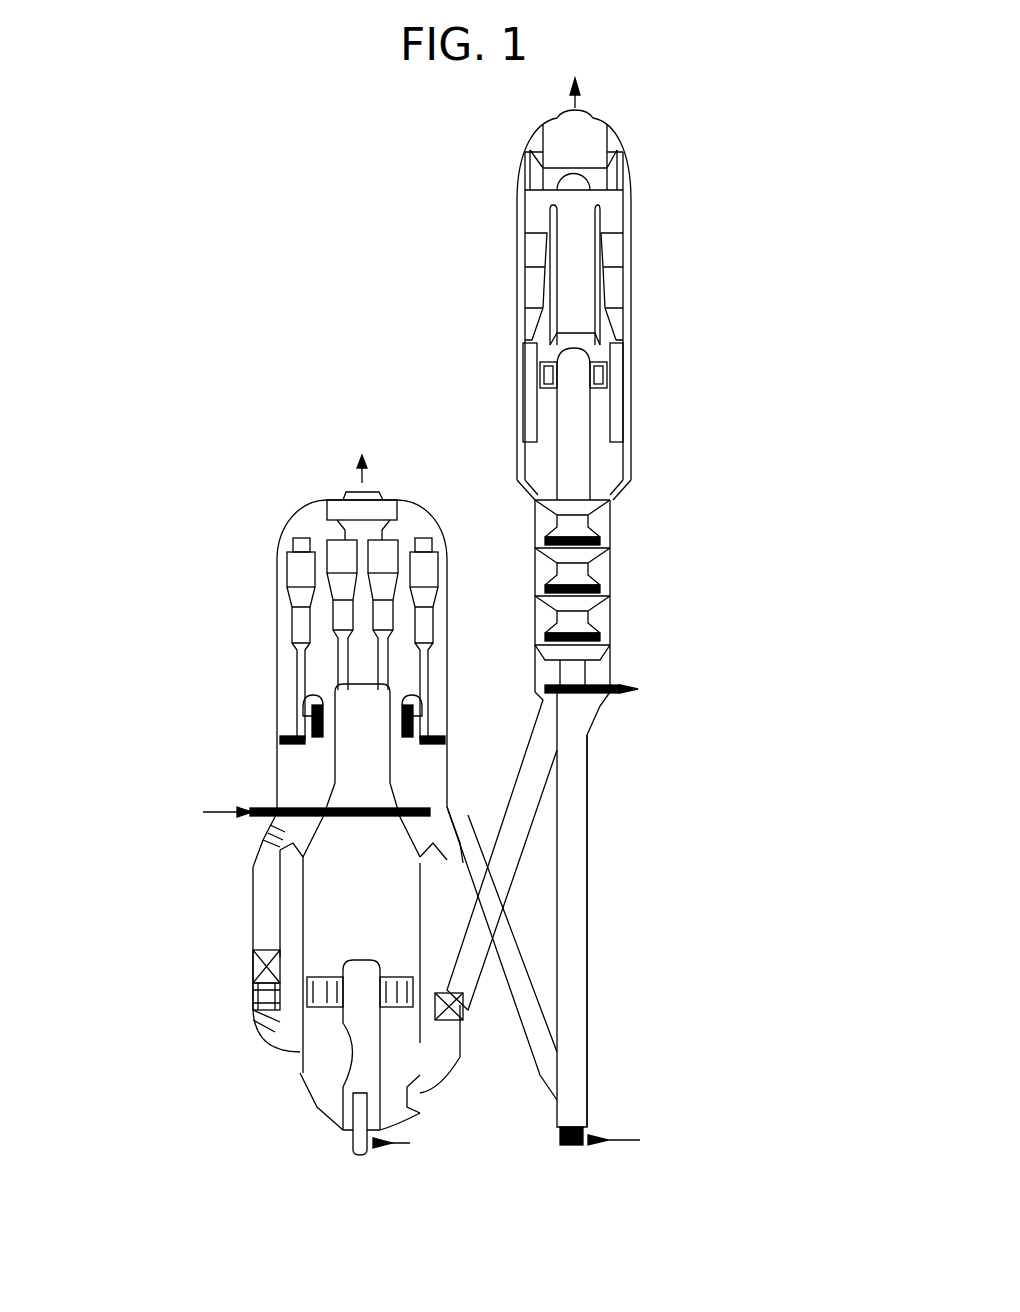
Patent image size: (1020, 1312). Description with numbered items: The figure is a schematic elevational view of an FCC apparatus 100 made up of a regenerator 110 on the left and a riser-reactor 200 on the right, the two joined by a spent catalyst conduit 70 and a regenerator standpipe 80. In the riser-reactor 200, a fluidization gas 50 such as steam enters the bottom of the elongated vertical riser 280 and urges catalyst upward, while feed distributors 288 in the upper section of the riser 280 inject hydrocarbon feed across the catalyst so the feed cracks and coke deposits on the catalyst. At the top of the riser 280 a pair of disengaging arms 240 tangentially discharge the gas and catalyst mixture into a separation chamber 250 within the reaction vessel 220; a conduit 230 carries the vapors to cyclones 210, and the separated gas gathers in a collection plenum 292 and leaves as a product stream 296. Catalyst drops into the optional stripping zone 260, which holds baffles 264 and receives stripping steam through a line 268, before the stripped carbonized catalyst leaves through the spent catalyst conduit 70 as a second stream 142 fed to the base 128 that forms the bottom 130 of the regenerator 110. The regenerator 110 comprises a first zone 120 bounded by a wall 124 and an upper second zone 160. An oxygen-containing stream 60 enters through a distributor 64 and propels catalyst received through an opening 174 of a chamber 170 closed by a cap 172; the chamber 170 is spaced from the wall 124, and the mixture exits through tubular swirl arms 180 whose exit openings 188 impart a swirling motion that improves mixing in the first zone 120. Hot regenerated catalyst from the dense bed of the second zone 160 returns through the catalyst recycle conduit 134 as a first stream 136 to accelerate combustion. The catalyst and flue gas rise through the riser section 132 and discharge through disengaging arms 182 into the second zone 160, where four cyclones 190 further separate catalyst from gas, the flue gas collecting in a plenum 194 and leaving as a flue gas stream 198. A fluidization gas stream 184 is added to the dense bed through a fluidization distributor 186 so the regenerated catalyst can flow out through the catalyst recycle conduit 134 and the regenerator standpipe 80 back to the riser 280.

The FCC apparatus 100 is at (215, 303).
The regenerator 110 is at (270, 653).
The first zone 120 is at (387, 905).
The wall 124 is at (257, 852).
The base 128 is at (420, 1092).
The bottom 130 is at (323, 1120).
The riser section 132 is at (347, 763).
The catalyst recycle conduit 134 is at (260, 900).
The first stream 136 is at (297, 1053).
The second stream 142 is at (407, 1117).
The second zone 160 is at (423, 510).
The chamber 170 is at (377, 1047).
The cap 172 is at (350, 960).
The opening 174 is at (340, 1048).
The swirl arms 180 is at (297, 965).
The disengaging arms 182 is at (313, 707).
The fluidization gas stream 184 is at (220, 810).
The fluidization distributor 186 is at (370, 807).
The exit openings 188 is at (300, 1010).
The cyclones 190 is at (343, 550).
The plenum 194 is at (343, 502).
The flue gas stream 198 is at (365, 483).
The oxygen-containing stream 60 is at (410, 1143).
The distributor 64 is at (353, 1147).
The spent catalyst conduit 70 is at (513, 843).
The regenerator standpipe 80 is at (540, 937).
The fluidization gas 50 is at (640, 1140).
The riser-reactor 200 is at (633, 275).
The cyclones 210 is at (523, 197).
The reaction vessel 220 is at (525, 300).
The conduit 230 is at (572, 322).
The disengaging arms 240 is at (598, 376).
The separation chamber 250 is at (600, 482).
The stripping zone 260 is at (610, 530).
The baffles 264 is at (587, 587).
The line 268 is at (638, 689).
The riser 280 is at (590, 850).
The feed distributors 288 is at (540, 930).
The collection plenum 292 is at (580, 142).
The product stream 296 is at (580, 107).